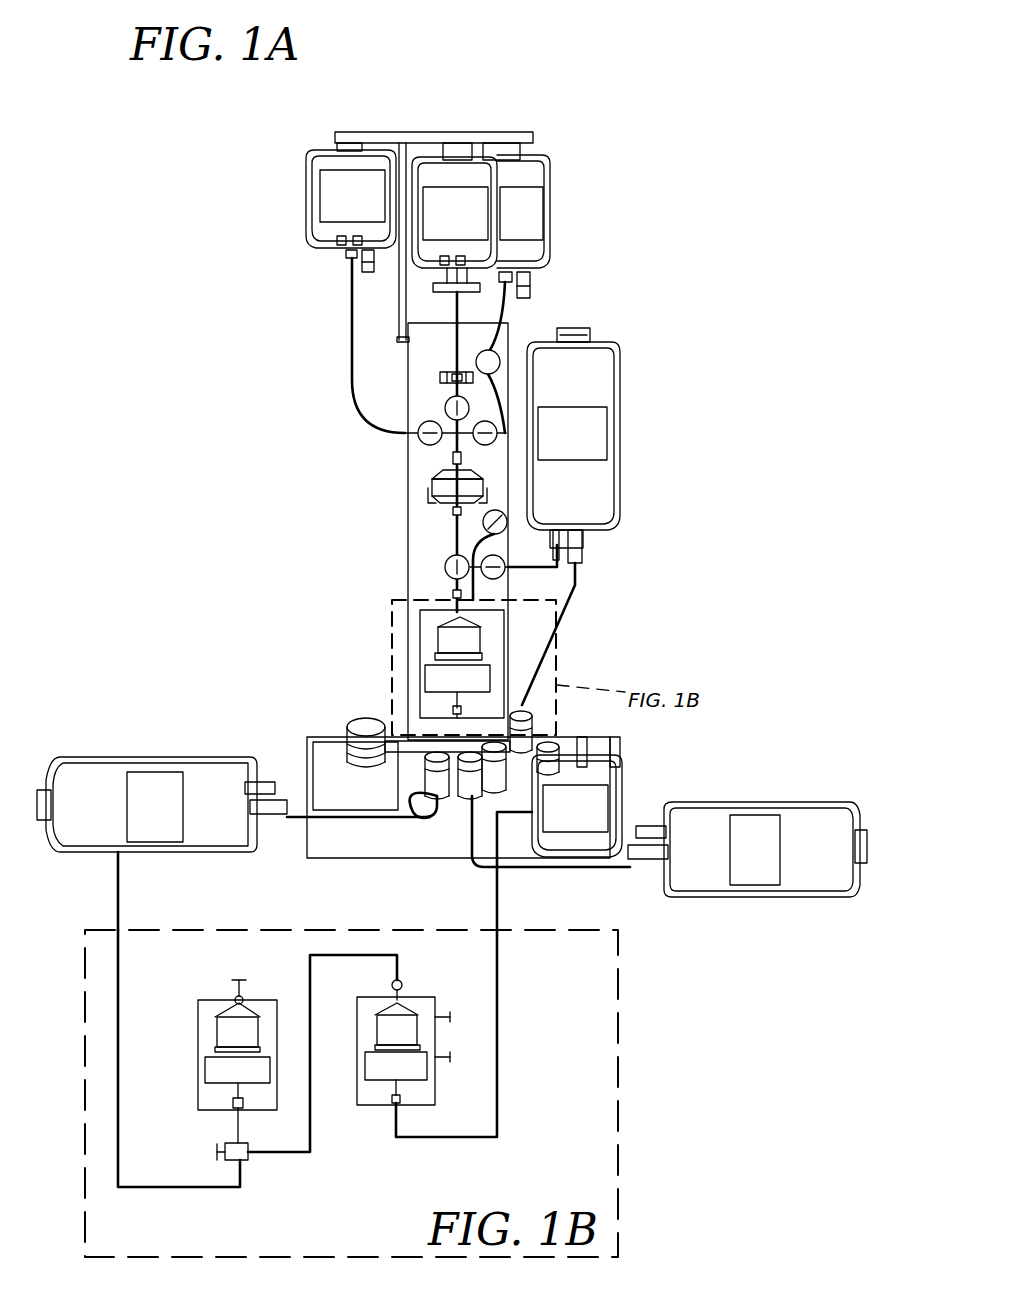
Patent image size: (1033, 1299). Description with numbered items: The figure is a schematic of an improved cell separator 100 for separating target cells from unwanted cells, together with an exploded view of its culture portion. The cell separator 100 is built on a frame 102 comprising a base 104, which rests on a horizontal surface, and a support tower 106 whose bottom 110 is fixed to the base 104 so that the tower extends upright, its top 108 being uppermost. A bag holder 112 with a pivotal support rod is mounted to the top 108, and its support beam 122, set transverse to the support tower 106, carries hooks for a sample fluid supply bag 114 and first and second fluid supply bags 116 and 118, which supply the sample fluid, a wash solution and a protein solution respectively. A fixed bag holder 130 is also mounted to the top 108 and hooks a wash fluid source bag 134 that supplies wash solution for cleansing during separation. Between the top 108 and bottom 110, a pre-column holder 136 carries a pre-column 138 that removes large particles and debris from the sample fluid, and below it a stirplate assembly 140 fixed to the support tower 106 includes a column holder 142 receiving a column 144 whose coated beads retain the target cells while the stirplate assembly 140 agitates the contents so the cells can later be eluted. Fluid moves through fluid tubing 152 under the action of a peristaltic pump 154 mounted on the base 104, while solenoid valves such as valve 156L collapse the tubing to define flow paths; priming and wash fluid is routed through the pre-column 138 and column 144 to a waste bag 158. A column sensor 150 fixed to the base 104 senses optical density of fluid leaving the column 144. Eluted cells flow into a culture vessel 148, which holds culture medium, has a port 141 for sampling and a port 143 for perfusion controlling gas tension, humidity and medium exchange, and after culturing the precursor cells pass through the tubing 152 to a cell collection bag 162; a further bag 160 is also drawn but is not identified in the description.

In FIG. 1A, the cell separator 100 is at (662, 268).
In FIG. 1A, the frame 102 is at (324, 513).
In FIG. 1A, the base 104 is at (450, 799).
In FIG. 1A, the support tower 106 is at (408, 563).
In FIG. 1A, the top 108 is at (408, 345).
In FIG. 1A, the bottom 110 is at (408, 698).
In FIG. 1A, the bag holder 112 is at (566, 137).
In FIG. 1A, the sample fluid supply bag 114 is at (427, 165).
In FIG. 1A, the first fluid supply bag 116 is at (308, 168).
In FIG. 1A, the second fluid supply bag 118 is at (551, 193).
In FIG. 1A, the support beam 122 is at (462, 131).
In FIG. 1A, the fixed bag holder 130 is at (546, 328).
In FIG. 1A, the wash fluid source bag 134 is at (621, 392).
In FIG. 1A, the pre-column holder 136 is at (430, 498).
In FIG. 1A, the pre-column 138 is at (433, 480).
In FIG. 1A, the stirplate assembly 140 is at (491, 617).
In FIG. 1B, the port 141 is at (444, 1022).
In FIG. 1A, the column holder 142 is at (483, 678).
In FIG. 1B, the port 143 is at (444, 1062).
In FIG. 1A, the column 144 is at (437, 640).
In FIG. 1B, the column 144 is at (222, 1028).
In FIG. 1B, the culture vessel 148 is at (412, 1030).
In FIG. 1B, the column sensor 150 is at (246, 1158).
In FIG. 1A, the fluid tubing 152 is at (350, 337).
In FIG. 1B, the fluid tubing 152 is at (303, 970).
In FIG. 1A, the peristaltic pump 154 is at (357, 720).
In FIG. 1A, the valve 156L is at (414, 816).
In FIG. 1A, the waste bag 158 is at (163, 853).
In FIG. 1A, the collection bag 160 is at (735, 897).
In FIG. 1A, the cell collection bag 162 is at (621, 782).